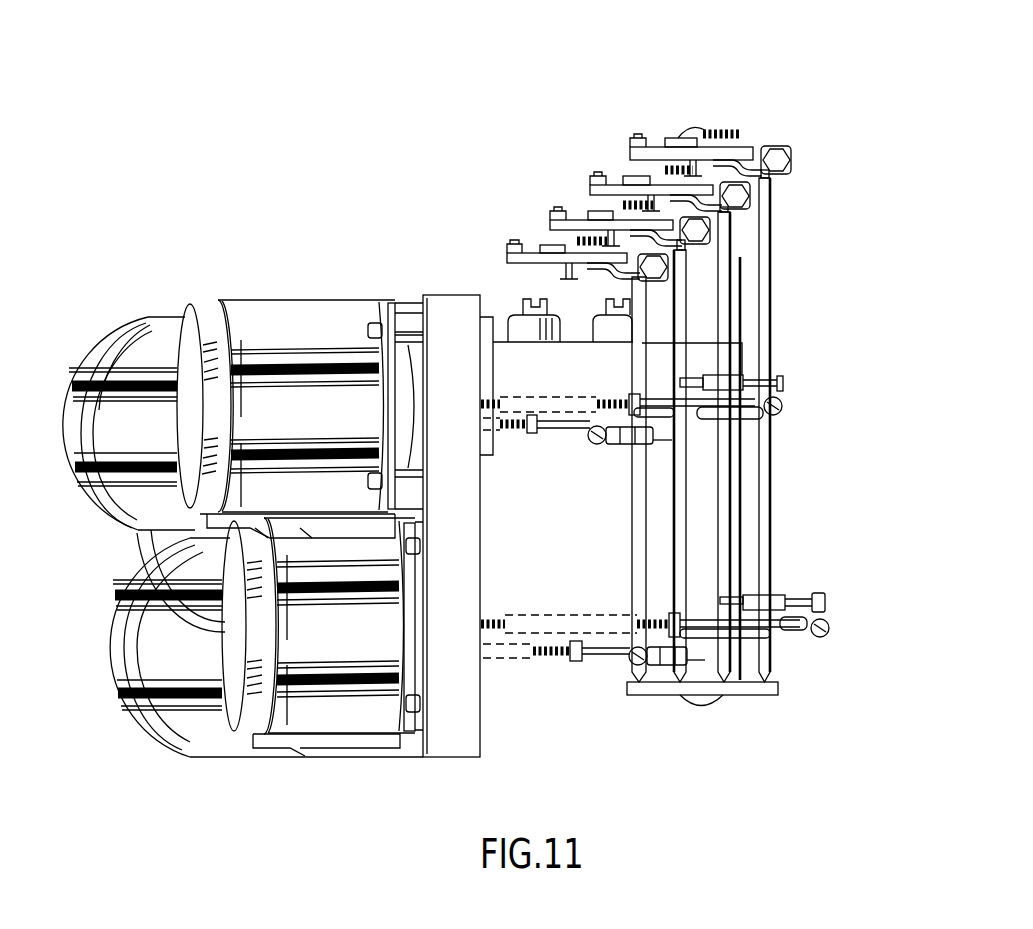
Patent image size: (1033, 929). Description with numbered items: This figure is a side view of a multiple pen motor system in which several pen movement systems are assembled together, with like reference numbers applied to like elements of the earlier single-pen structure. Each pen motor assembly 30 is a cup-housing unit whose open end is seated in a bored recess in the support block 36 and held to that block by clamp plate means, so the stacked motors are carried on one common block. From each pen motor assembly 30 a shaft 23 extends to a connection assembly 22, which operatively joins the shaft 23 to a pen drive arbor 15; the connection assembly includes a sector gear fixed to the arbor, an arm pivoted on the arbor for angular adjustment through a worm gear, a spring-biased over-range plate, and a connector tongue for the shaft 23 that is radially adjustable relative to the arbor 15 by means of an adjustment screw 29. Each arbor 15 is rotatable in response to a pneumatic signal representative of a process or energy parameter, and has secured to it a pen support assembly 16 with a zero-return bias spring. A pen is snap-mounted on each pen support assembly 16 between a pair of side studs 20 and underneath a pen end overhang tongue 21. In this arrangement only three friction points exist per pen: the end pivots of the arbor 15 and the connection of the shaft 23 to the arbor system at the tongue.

The pen drive arbor 15 is at (773, 517).
The pen support assembly 16 is at (701, 125).
The side studs 20 is at (509, 243).
The pen end overhang tongue 21 is at (670, 146).
The connection assembly 22 is at (803, 592).
The shaft 23 is at (536, 617).
The adjustment screw 29 is at (827, 641).
The pen motor assembly 30 is at (287, 297).
The support block 36 is at (443, 760).